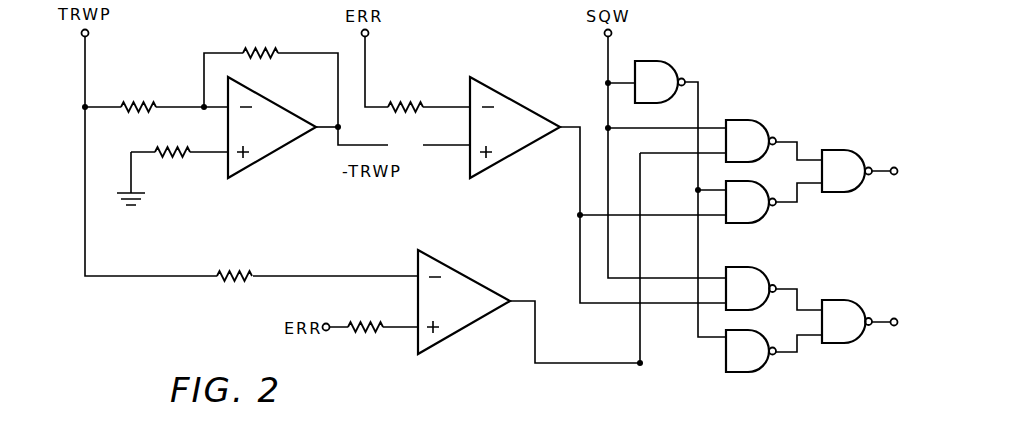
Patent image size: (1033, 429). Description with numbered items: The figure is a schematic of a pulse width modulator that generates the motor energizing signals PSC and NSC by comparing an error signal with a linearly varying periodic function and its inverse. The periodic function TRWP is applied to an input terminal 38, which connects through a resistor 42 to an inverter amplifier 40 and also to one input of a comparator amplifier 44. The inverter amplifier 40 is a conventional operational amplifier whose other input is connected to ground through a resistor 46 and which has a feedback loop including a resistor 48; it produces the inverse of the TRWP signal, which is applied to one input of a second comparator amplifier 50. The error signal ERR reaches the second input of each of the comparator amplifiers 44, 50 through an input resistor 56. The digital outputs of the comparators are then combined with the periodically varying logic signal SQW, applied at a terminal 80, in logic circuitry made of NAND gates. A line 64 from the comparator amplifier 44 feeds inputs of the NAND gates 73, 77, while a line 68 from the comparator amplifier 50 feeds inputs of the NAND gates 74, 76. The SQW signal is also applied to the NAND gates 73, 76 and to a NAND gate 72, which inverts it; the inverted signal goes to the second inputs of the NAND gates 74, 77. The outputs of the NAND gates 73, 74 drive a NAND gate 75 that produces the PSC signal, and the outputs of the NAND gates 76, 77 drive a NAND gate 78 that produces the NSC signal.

The input terminal 38 is at (89, 35).
The resistor 42 is at (130, 101).
The resistor 48 is at (255, 47).
The resistor 46 is at (190, 155).
The inverter amplifier 40 is at (278, 138).
The input resistor 56 is at (393, 101).
The comparator amplifier 50 is at (500, 93).
The line 68 is at (579, 180).
The terminal 80 is at (603, 34).
The NAND gate 72 is at (655, 73).
The NAND gate 73 is at (745, 127).
The NAND gate 74 is at (752, 211).
The NAND gate 75 is at (840, 155).
The NAND gate 76 is at (750, 280).
The NAND gate 77 is at (752, 362).
The NAND gate 78 is at (837, 313).
The comparator amplifier 44 is at (440, 268).
The line 64 is at (532, 345).